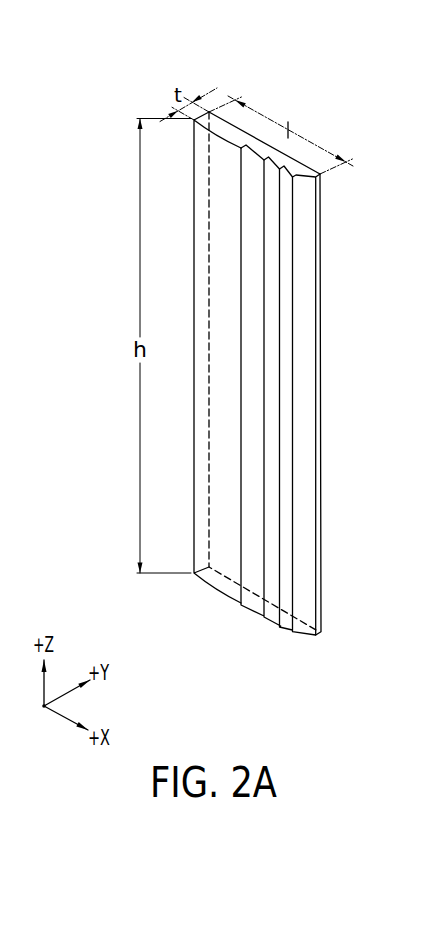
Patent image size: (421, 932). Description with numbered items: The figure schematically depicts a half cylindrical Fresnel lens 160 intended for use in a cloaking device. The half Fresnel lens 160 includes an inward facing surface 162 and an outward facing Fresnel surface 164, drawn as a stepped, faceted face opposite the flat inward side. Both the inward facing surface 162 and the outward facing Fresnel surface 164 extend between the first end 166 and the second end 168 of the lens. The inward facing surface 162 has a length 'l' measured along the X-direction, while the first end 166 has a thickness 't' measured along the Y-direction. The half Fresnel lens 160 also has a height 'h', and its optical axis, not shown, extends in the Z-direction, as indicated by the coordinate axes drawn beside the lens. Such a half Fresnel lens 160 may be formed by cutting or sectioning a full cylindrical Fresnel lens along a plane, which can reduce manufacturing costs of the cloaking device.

The half Fresnel lens 160 is at (295, 100).
The inward facing surface 162 is at (292, 265).
The outward facing Fresnel surface 164 is at (300, 593).
The first end 166 is at (208, 332).
The second end 168 is at (320, 383).